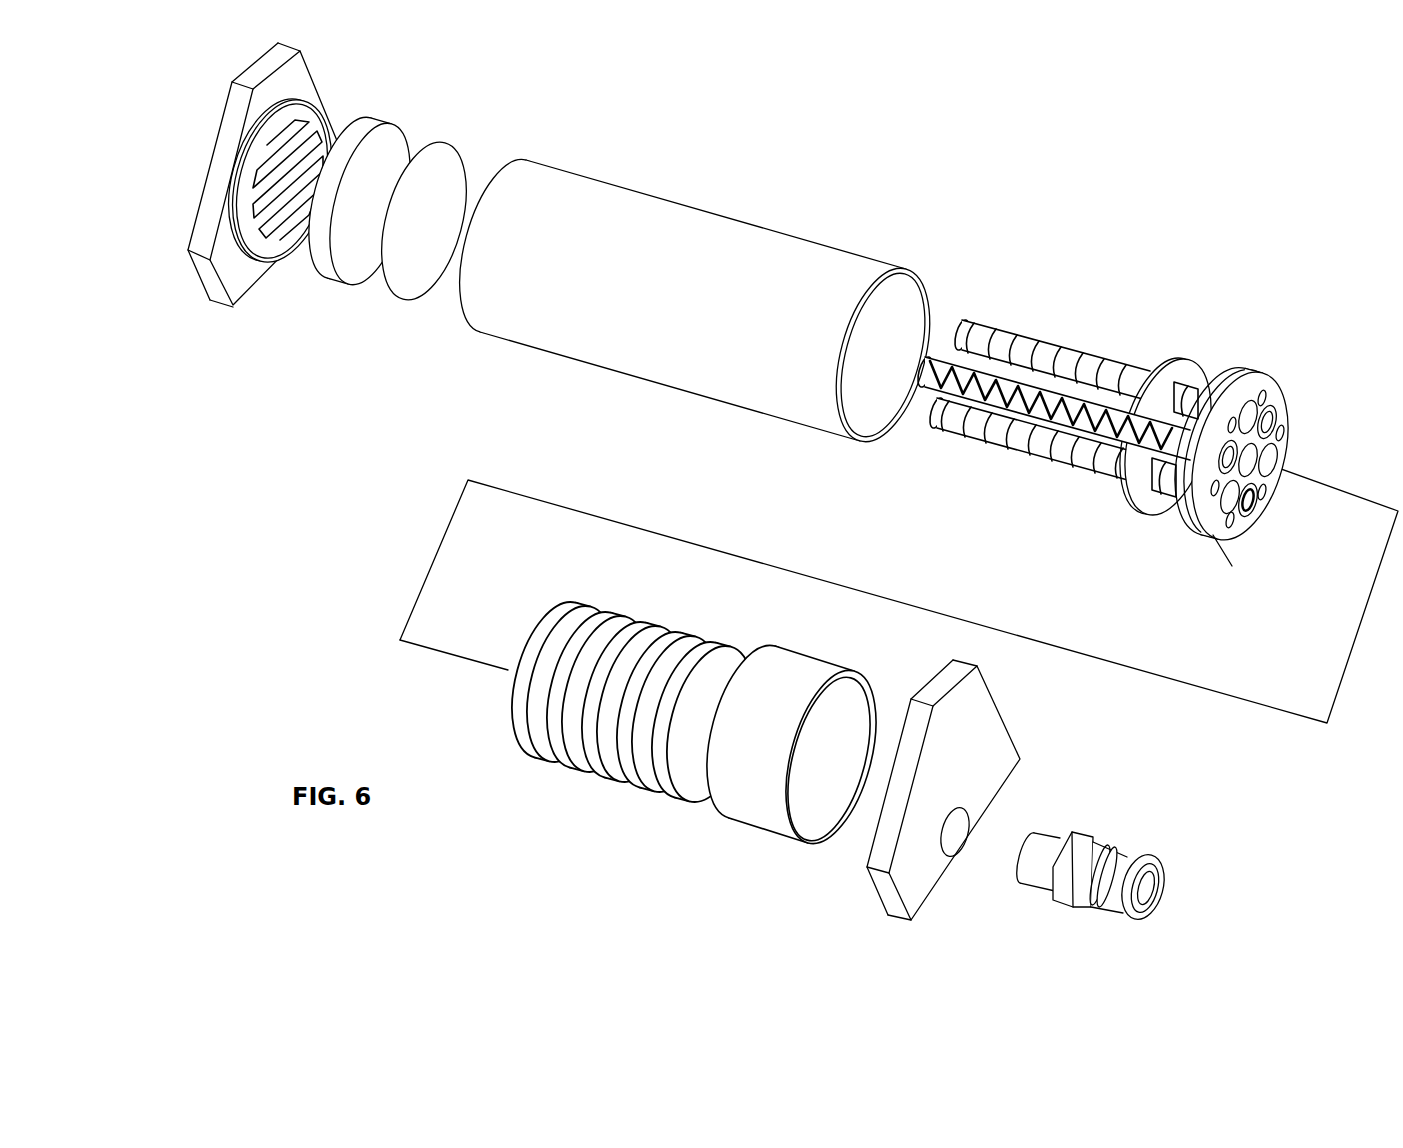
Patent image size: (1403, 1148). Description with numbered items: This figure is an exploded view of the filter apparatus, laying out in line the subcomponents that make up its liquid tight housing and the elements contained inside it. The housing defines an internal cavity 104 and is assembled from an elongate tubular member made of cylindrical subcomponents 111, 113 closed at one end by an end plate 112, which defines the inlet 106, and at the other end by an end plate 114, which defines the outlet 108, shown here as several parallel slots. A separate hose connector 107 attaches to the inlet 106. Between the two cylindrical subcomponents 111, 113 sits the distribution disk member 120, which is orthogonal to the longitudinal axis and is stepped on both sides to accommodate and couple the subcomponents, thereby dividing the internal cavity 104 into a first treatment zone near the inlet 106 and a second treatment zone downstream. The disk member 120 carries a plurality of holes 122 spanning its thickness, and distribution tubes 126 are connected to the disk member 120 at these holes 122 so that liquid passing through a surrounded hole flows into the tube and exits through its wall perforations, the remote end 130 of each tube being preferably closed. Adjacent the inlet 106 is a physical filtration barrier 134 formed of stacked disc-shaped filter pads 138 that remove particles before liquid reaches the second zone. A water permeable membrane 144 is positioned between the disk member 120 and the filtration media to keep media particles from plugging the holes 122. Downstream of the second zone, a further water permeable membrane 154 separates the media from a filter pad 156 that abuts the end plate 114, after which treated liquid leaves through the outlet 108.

The internal cavity 104 is at (899, 358).
The inlet 106 is at (957, 853).
The hose connector 107 is at (1110, 843).
The outlet 108 is at (310, 130).
The cylindrical subcomponent 111 is at (783, 233).
The end plate 112 is at (927, 892).
The cylindrical subcomponent 113 is at (760, 818).
The end plate 114 is at (229, 140).
The distribution disk member 120 is at (1283, 403).
The holes 122 is at (1282, 432).
The distribution tubes 126 is at (1007, 337).
The remote end 130 is at (958, 322).
The filtration barrier 134 is at (593, 800).
The filter pads 138 is at (667, 653).
The water permeable membrane 144 is at (1177, 367).
The water permeable membrane 154 is at (447, 157).
The filter pad 156 is at (368, 130).